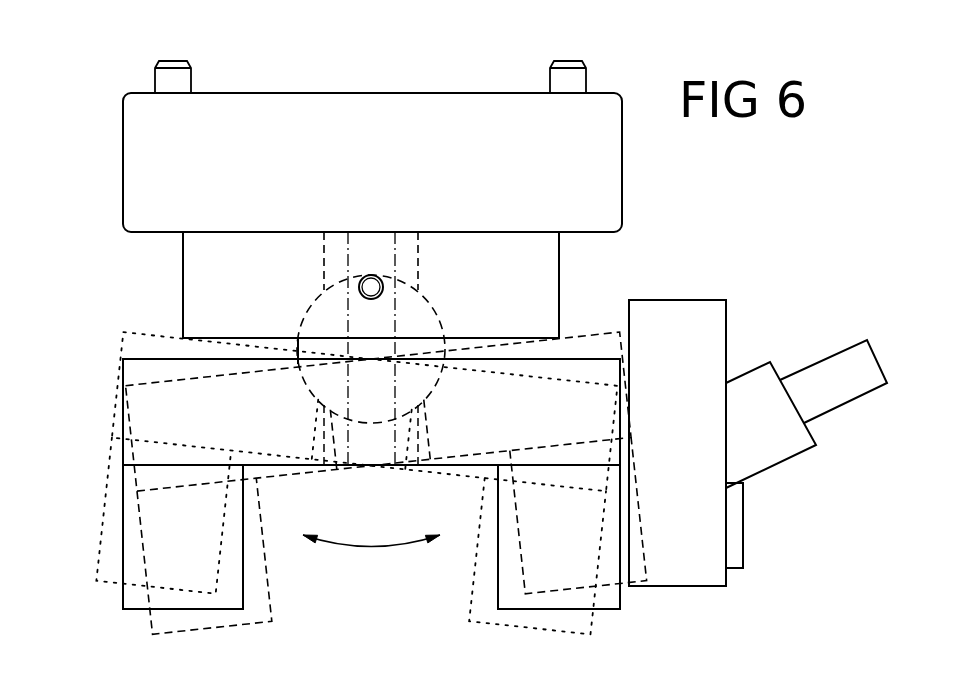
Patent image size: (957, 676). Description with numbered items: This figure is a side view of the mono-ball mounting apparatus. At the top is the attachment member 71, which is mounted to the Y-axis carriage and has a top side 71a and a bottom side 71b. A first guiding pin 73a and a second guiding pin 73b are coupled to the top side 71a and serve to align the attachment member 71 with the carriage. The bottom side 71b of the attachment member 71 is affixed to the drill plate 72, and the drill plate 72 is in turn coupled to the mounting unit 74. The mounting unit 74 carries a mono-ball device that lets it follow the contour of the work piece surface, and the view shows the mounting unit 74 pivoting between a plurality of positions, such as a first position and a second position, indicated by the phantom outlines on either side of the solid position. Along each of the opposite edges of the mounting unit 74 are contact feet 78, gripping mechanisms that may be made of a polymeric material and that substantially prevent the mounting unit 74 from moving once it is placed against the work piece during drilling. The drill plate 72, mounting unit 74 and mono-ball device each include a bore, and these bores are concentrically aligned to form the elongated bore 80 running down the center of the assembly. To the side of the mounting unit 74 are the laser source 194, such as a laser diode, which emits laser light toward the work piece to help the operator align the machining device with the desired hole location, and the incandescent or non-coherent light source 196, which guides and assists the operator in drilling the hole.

The attachment member 71 is at (123, 125).
The top side 71a is at (353, 93).
The bottom side 71b is at (580, 233).
The drill plate 72 is at (212, 293).
The first guiding pin 73a is at (172, 74).
The second guiding pin 73b is at (563, 78).
The mounting unit 74 is at (362, 489).
The contact feet 78 is at (135, 602).
The elongated bore 80 is at (395, 257).
The laser source 194 is at (762, 378).
The light source 196 is at (735, 546).